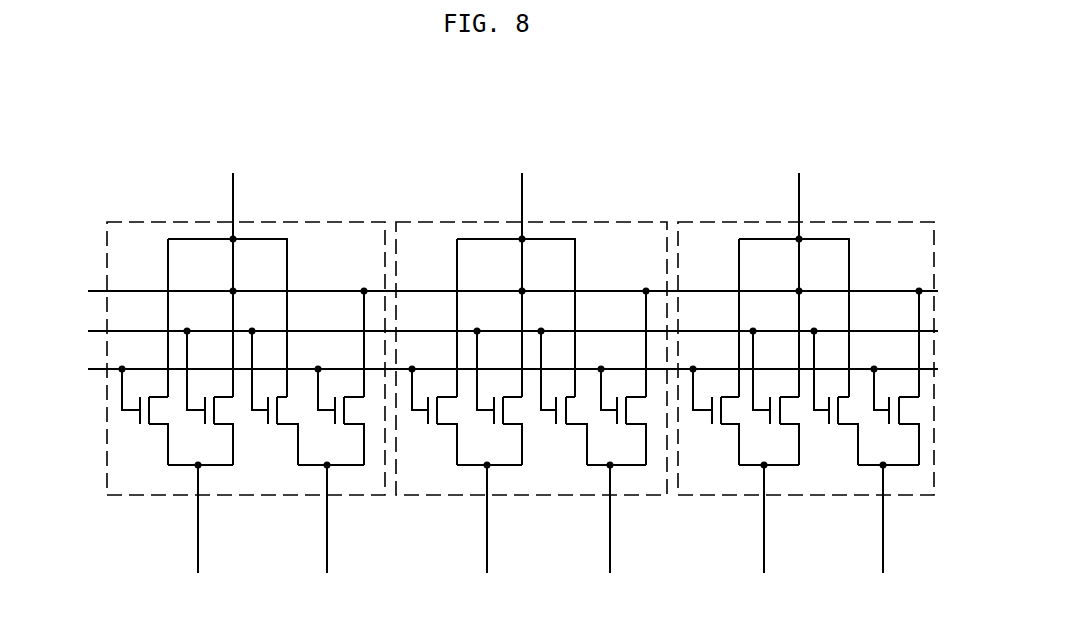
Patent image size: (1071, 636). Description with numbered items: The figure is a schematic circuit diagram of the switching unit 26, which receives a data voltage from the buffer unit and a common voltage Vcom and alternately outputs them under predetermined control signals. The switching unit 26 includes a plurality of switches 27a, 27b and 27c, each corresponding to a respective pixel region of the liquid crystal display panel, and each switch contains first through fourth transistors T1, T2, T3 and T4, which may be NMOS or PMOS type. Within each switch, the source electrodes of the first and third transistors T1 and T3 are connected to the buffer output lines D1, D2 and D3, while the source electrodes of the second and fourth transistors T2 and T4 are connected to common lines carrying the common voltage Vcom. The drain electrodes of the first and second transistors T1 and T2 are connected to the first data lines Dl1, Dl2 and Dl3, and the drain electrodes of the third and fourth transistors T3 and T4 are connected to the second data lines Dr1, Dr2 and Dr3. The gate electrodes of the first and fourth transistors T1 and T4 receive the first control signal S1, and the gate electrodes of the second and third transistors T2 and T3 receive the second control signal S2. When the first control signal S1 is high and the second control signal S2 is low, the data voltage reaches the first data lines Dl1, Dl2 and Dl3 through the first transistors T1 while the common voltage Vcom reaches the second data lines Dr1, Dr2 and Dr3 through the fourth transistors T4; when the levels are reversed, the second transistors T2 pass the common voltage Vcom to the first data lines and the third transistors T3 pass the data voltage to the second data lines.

The switching unit 26 is at (73, 102).
The switch 27a is at (292, 222).
The switch 27b is at (580, 222).
The switch 27c is at (850, 222).
The first transistor T1 is at (145, 417).
The second transistor T2 is at (210, 398).
The third transistor T3 is at (275, 398).
The fourth transistor T4 is at (341, 417).
The output line of the buffer unit D1 is at (237, 272).
The output line of the buffer unit D2 is at (527, 272).
The output line of the buffer unit D3 is at (803, 272).
The first data line Dl1 is at (199, 536).
The second data line Dr1 is at (334, 536).
The first data line Dl2 is at (488, 536).
The second data line Dr2 is at (617, 536).
The first data line Dl3 is at (765, 536).
The second data line Dr3 is at (890, 536).
The common voltage Vcom is at (487, 290).
The first control signal S1 is at (495, 369).
The second control signal S2 is at (495, 330).